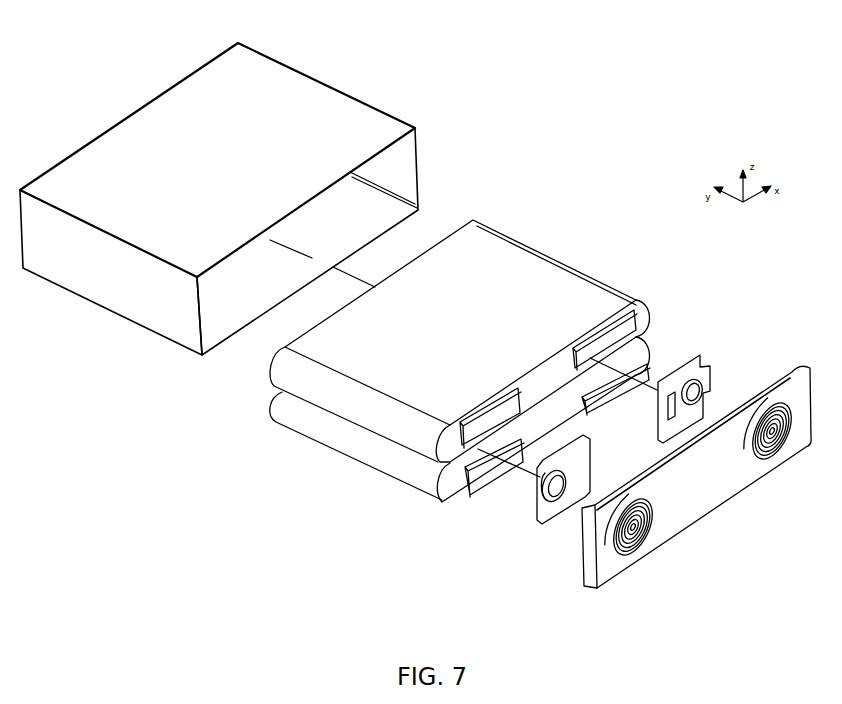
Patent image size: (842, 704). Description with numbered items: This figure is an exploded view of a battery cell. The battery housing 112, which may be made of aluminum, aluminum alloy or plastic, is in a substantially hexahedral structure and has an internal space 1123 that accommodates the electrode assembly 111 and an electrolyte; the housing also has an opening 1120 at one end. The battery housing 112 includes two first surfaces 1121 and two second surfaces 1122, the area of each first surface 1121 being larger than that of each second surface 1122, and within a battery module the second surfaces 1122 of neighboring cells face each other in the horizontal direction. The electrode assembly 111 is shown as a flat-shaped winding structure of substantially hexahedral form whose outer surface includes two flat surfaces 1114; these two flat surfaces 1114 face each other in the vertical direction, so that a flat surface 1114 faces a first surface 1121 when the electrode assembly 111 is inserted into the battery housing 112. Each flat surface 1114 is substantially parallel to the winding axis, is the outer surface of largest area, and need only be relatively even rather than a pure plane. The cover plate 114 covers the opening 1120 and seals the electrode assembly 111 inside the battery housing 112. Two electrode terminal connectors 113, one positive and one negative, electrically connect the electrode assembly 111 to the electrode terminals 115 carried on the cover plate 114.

The electrode assembly 111 is at (463, 357).
The flat surface 1114 is at (488, 263).
The battery housing 112 is at (260, 211).
The opening 1120 is at (419, 172).
The first surface 1121 is at (275, 87).
The second surface 1122 is at (100, 282).
The internal space 1123 is at (242, 310).
The electrode terminal connector 113 is at (692, 353).
The cover plate 114 is at (786, 376).
The electrode terminal 115 is at (632, 553).